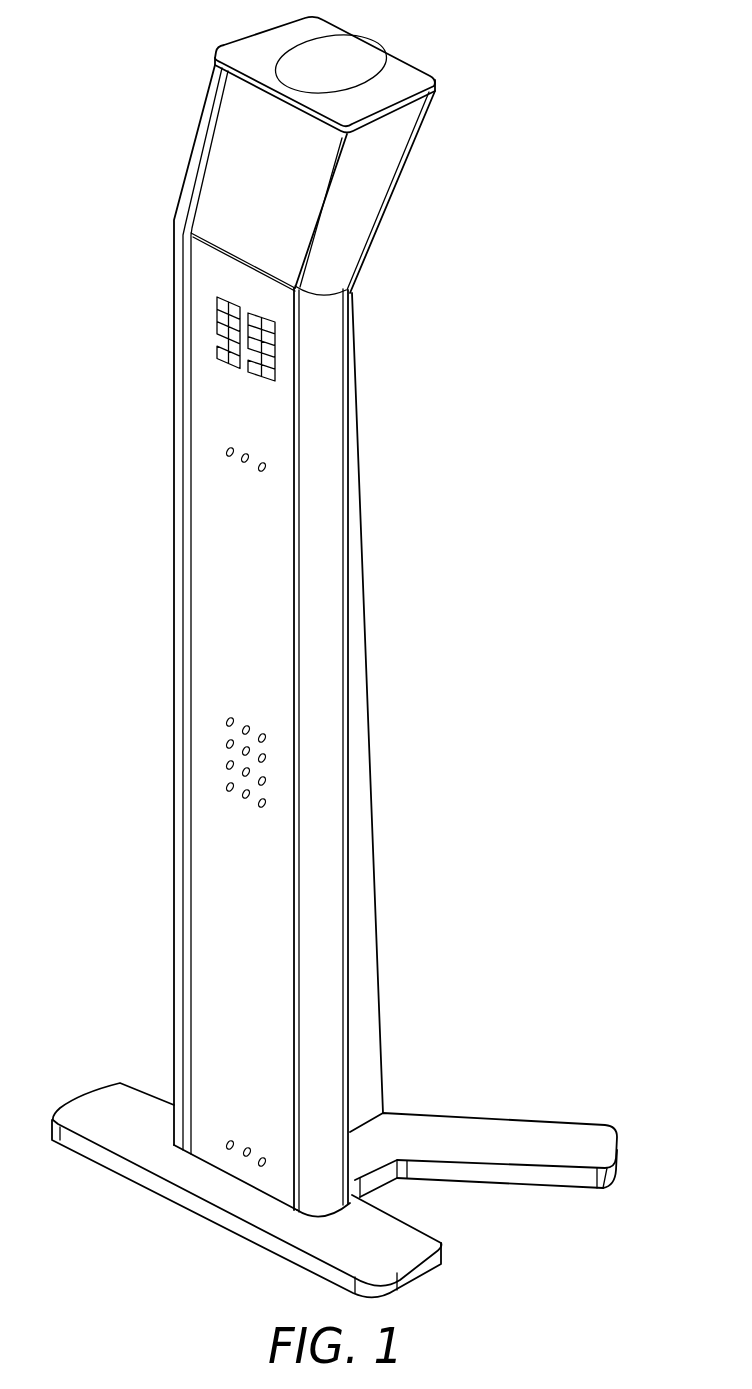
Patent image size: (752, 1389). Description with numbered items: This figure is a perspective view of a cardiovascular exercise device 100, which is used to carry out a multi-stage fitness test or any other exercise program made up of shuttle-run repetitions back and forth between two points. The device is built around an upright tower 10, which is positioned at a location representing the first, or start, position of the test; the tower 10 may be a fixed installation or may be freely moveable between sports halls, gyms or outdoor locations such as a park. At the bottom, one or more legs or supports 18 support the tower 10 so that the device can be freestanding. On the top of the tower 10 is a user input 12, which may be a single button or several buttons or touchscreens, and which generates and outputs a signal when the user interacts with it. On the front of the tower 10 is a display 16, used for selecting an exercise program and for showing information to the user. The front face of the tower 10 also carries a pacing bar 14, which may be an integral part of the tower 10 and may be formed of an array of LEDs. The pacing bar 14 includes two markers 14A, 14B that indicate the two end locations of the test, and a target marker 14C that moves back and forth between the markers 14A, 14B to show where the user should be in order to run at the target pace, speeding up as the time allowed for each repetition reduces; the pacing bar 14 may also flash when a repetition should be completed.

The cardiovascular exercise device 100 is at (116, 80).
The tower 10 is at (178, 548).
The user input 12 is at (357, 62).
The pacing bar 14 is at (220, 644).
The marker 14A is at (238, 1157).
The marker 14B is at (226, 449).
The target marker 14C is at (226, 721).
The display 16 is at (217, 311).
The legs or supports 18 is at (505, 1122).